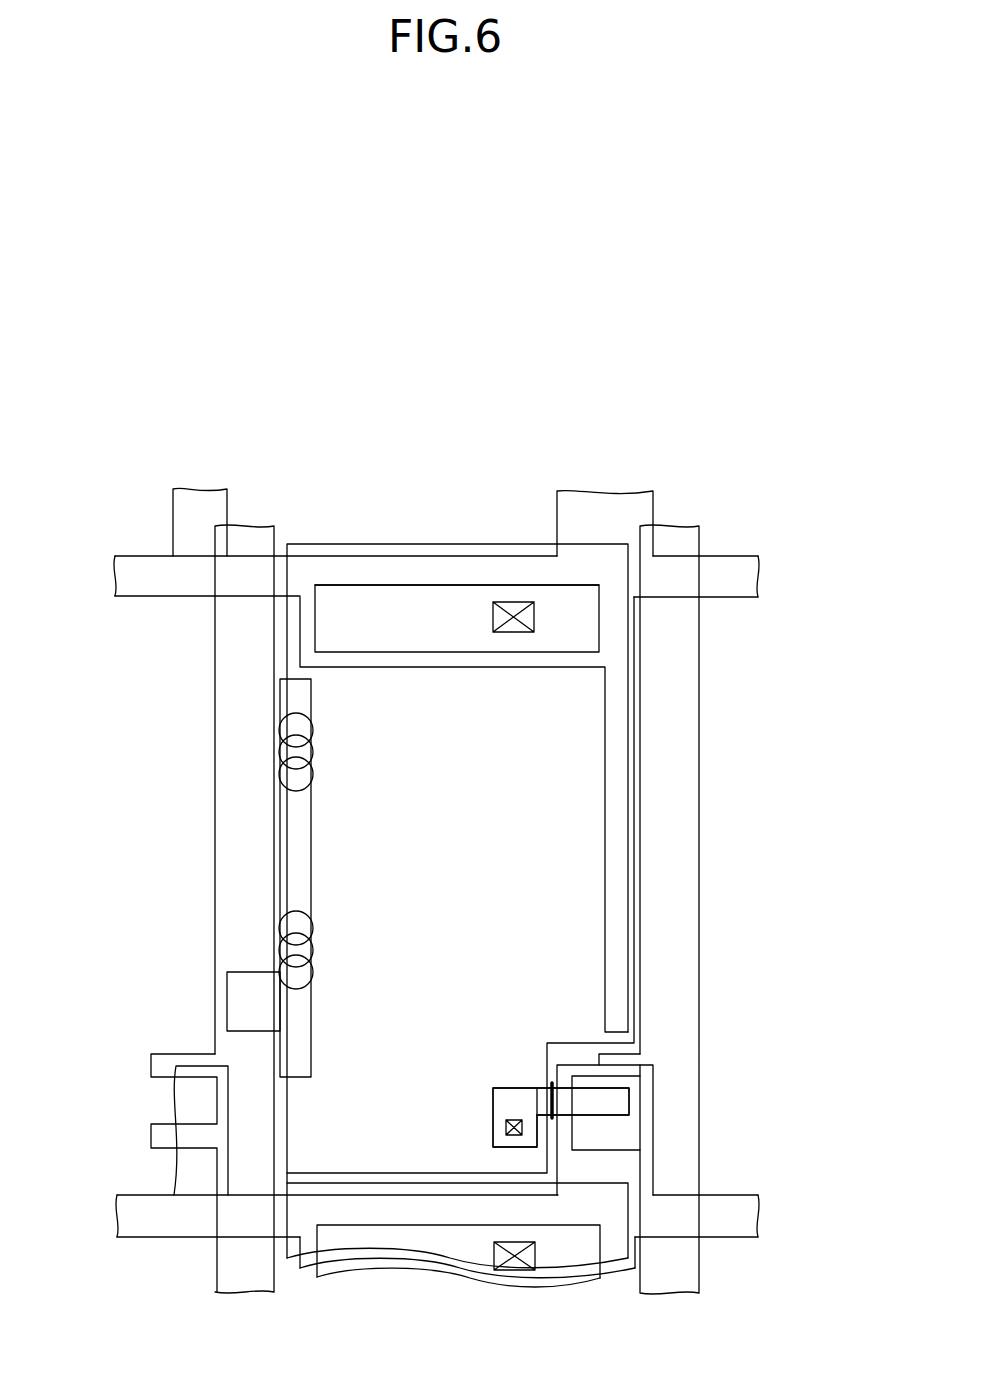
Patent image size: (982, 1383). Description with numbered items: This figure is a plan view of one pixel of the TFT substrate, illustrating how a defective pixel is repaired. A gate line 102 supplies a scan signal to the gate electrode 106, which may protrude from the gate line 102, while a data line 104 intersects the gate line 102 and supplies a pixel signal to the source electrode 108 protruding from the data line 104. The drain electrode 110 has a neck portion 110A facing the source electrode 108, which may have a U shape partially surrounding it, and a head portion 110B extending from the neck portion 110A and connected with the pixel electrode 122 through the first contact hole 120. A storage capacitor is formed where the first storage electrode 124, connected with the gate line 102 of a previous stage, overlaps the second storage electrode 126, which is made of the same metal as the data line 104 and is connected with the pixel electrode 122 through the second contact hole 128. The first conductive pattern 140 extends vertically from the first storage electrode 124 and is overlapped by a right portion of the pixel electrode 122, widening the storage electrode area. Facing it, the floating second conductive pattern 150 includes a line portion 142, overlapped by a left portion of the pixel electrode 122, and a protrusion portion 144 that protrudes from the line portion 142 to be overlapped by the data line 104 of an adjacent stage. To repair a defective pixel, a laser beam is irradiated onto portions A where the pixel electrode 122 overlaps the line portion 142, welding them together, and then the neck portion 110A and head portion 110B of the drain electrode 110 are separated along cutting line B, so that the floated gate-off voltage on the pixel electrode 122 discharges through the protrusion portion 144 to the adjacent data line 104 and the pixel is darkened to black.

The gate line 102 is at (752, 577).
The data line 104 is at (670, 1293).
The gate electrode 106 is at (653, 1083).
The source electrode 108 is at (600, 1054).
The drain electrode 110 is at (523, 1034).
The neck portion 110A is at (603, 1090).
The head portion 110B is at (493, 1103).
The first contact hole 120 is at (503, 1127).
The pixel electrode 122 is at (628, 637).
The first storage electrode 124 is at (373, 670).
The second storage electrode 126 is at (455, 585).
The second contact hole 128 is at (502, 633).
The first conductive pattern 140 is at (600, 848).
The line portion 142 is at (280, 926).
The protrusion portion 144 is at (227, 1002).
The second conductive pattern 150 is at (171, 878).
The portion A is at (308, 770).
The cutting line B is at (548, 1098).